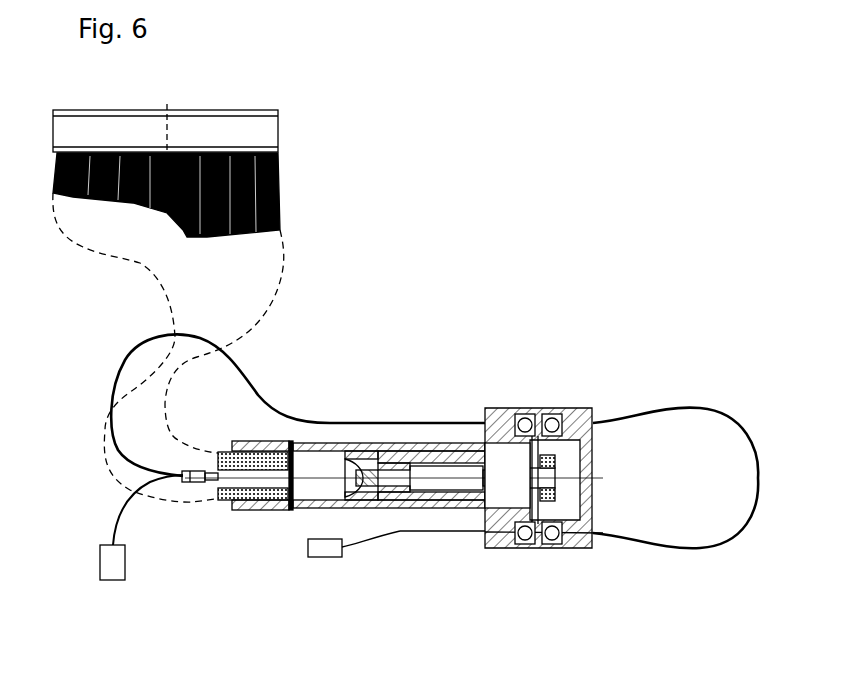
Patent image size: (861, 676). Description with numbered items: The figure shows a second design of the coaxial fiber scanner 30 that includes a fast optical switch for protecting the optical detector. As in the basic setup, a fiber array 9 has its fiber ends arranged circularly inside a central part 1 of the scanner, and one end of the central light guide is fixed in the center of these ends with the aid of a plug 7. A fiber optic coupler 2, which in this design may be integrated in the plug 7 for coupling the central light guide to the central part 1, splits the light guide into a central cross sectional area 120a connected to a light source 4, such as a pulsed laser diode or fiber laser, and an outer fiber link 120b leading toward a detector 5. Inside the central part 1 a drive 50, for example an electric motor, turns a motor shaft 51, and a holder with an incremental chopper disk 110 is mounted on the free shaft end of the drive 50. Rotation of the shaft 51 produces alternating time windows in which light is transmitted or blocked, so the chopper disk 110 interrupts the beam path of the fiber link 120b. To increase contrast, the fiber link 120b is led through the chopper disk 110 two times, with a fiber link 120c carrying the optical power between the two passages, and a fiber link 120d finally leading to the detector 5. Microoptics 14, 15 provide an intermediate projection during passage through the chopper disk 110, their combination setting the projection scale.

The central part 1 is at (416, 438).
The fiber optic coupler 2 is at (190, 482).
The light source 4 is at (99, 550).
The detector 5 is at (308, 550).
The plug 7 is at (220, 482).
The fiber array 9 is at (280, 191).
The microoptics 14 is at (518, 420).
The microoptics 15 is at (560, 420).
The fiber scanner 30 is at (592, 174).
The drive 50 is at (425, 478).
The motor shaft 51 is at (497, 497).
The incremental chopper disk 110 is at (590, 412).
The central cross sectional area 120a is at (120, 508).
The fiber link 120b is at (338, 418).
The fiber link 120c is at (760, 468).
The fiber link 120d is at (413, 531).